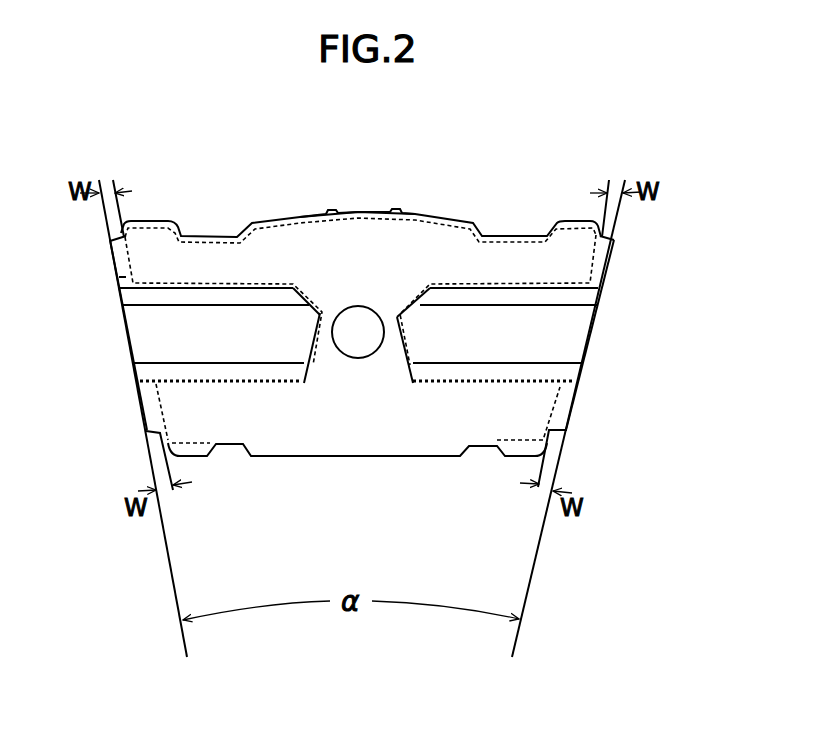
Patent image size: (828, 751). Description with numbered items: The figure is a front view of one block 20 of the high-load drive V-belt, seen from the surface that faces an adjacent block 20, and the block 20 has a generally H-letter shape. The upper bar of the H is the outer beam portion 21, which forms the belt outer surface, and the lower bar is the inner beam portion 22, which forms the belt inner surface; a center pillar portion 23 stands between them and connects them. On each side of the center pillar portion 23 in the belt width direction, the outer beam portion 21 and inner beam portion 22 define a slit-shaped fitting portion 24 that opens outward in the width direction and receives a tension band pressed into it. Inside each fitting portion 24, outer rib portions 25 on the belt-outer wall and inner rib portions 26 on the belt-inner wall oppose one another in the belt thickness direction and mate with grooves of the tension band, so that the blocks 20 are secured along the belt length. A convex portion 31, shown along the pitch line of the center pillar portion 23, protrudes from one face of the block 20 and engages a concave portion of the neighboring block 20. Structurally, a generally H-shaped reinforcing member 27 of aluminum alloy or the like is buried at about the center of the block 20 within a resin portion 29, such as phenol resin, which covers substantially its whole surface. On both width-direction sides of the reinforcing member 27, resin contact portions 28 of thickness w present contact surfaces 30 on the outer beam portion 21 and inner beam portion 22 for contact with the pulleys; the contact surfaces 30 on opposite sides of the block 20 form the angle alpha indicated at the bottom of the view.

The block 20 is at (144, 132).
The outer beam portion 21 is at (517, 258).
The inner beam portion 22 is at (483, 423).
The center pillar portion 23 is at (388, 347).
The fitting portion 24 is at (189, 287).
The outer rib portion 25 is at (278, 297).
The inner rib portion 26 is at (207, 362).
The reinforcing member 27 is at (337, 430).
The contact portion 28 is at (147, 407).
The resin portion 29 is at (366, 238).
The contact surface 30 is at (112, 258).
The convex portion 31 is at (363, 340).